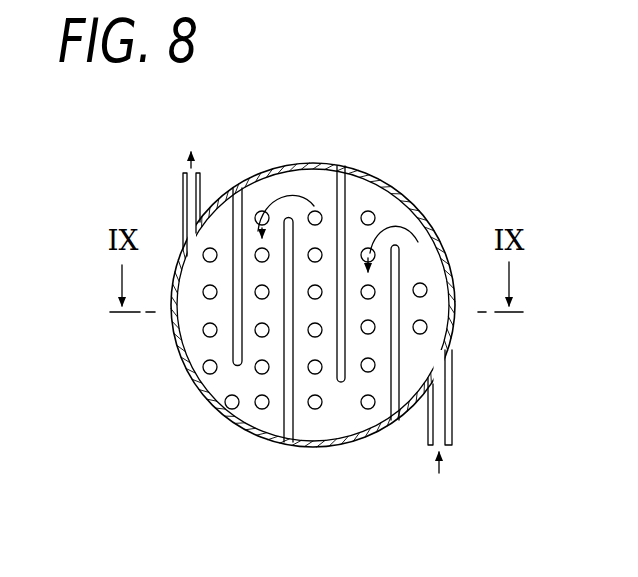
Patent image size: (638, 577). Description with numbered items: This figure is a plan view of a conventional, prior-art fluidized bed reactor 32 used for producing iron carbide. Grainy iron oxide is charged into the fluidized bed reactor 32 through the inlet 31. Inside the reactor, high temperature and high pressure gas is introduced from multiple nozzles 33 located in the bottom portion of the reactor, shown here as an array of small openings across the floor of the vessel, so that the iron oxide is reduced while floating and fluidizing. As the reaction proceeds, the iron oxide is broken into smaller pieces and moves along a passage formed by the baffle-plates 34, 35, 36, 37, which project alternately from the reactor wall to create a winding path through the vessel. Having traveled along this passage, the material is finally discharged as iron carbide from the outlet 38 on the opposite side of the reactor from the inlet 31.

The inlet 31 is at (453, 406).
The fluidized bed reactor 32 is at (318, 152).
The nozzles 33 is at (429, 284).
The baffle-plate 34 is at (390, 388).
The baffle-plate 35 is at (335, 371).
The baffle-plate 36 is at (272, 405).
The baffle-plate 37 is at (230, 354).
The outlet 38 is at (182, 208).